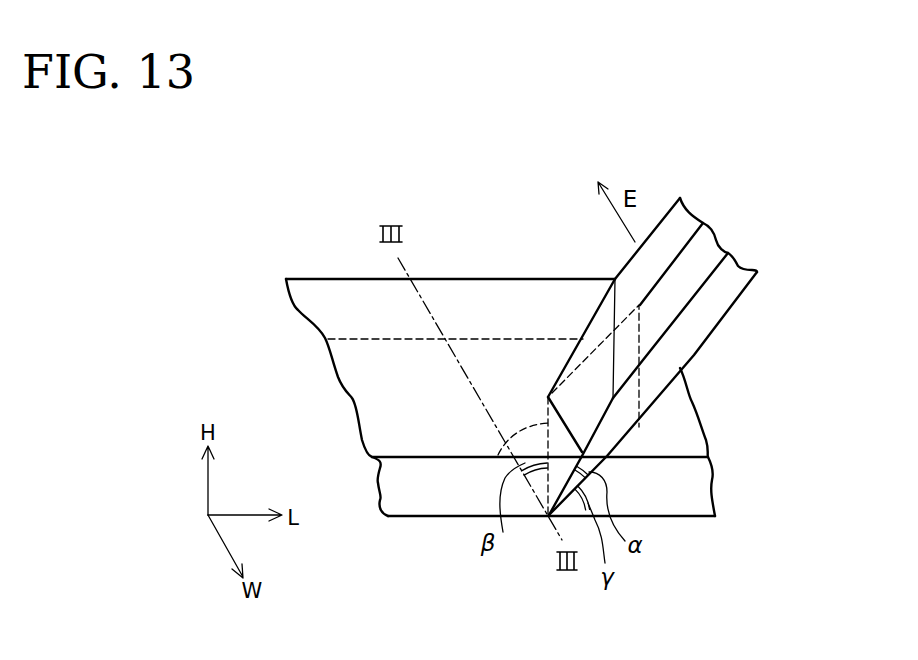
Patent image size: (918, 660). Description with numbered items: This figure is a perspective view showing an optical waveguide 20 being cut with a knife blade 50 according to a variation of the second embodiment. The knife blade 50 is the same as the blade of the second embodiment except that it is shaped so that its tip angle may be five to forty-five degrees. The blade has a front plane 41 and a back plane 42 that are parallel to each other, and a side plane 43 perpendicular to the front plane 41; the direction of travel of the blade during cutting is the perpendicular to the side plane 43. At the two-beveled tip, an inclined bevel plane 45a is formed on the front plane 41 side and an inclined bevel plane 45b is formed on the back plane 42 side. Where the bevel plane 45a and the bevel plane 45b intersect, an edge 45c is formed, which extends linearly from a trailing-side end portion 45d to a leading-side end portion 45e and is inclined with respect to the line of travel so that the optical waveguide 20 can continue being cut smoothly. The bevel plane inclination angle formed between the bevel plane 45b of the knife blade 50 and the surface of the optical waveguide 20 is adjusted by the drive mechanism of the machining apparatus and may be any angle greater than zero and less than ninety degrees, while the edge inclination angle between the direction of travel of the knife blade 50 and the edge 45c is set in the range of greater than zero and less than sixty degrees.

The optical waveguide 20 is at (338, 280).
The knife blade 50 is at (742, 313).
The front plane 41 is at (705, 253).
The back plane 42 is at (683, 352).
The side plane 43 is at (700, 328).
The bevel plane 45a is at (600, 388).
The bevel plane 45b is at (625, 418).
The edge 45c is at (498, 455).
The trailing-side end portion 45d is at (549, 515).
The leading-side end portion 45e is at (548, 397).